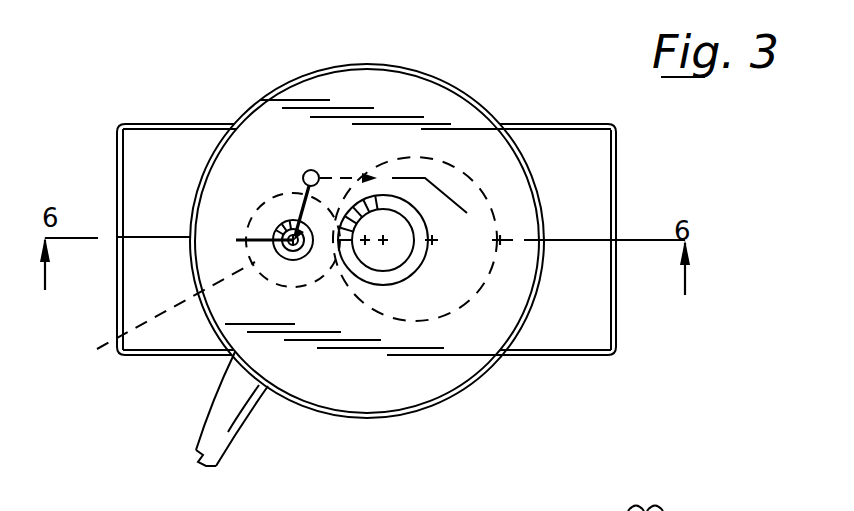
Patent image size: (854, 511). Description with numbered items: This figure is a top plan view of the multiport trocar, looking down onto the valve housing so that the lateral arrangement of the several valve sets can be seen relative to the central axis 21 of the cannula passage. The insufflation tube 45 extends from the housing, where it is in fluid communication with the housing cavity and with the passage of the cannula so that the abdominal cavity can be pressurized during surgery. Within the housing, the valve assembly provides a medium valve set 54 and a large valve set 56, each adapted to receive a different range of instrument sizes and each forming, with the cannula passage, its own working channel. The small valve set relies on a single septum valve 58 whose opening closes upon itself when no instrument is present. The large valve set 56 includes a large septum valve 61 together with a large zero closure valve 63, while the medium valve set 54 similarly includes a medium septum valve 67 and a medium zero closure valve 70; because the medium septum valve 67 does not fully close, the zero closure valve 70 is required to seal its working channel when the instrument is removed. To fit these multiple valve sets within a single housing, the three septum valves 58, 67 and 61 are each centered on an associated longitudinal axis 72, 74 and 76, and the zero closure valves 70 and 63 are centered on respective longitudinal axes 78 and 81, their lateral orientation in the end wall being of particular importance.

The central axis 21 is at (366, 237).
The insufflation tube 45 is at (210, 433).
The medium valve set 54 is at (225, 205).
The large valve set 56 is at (470, 240).
The septum valve 58 is at (304, 175).
The large septum valve 61 is at (388, 285).
The large zero closure valve 63 is at (457, 312).
The medium septum valve 67 is at (307, 265).
The medium zero closure valve 70 is at (157, 320).
The longitudinal axis 72 is at (317, 172).
The longitudinal axis 74 is at (291, 219).
The longitudinal axis 76 is at (384, 238).
The longitudinal axis 78 is at (276, 262).
The longitudinal axis 81 is at (433, 237).